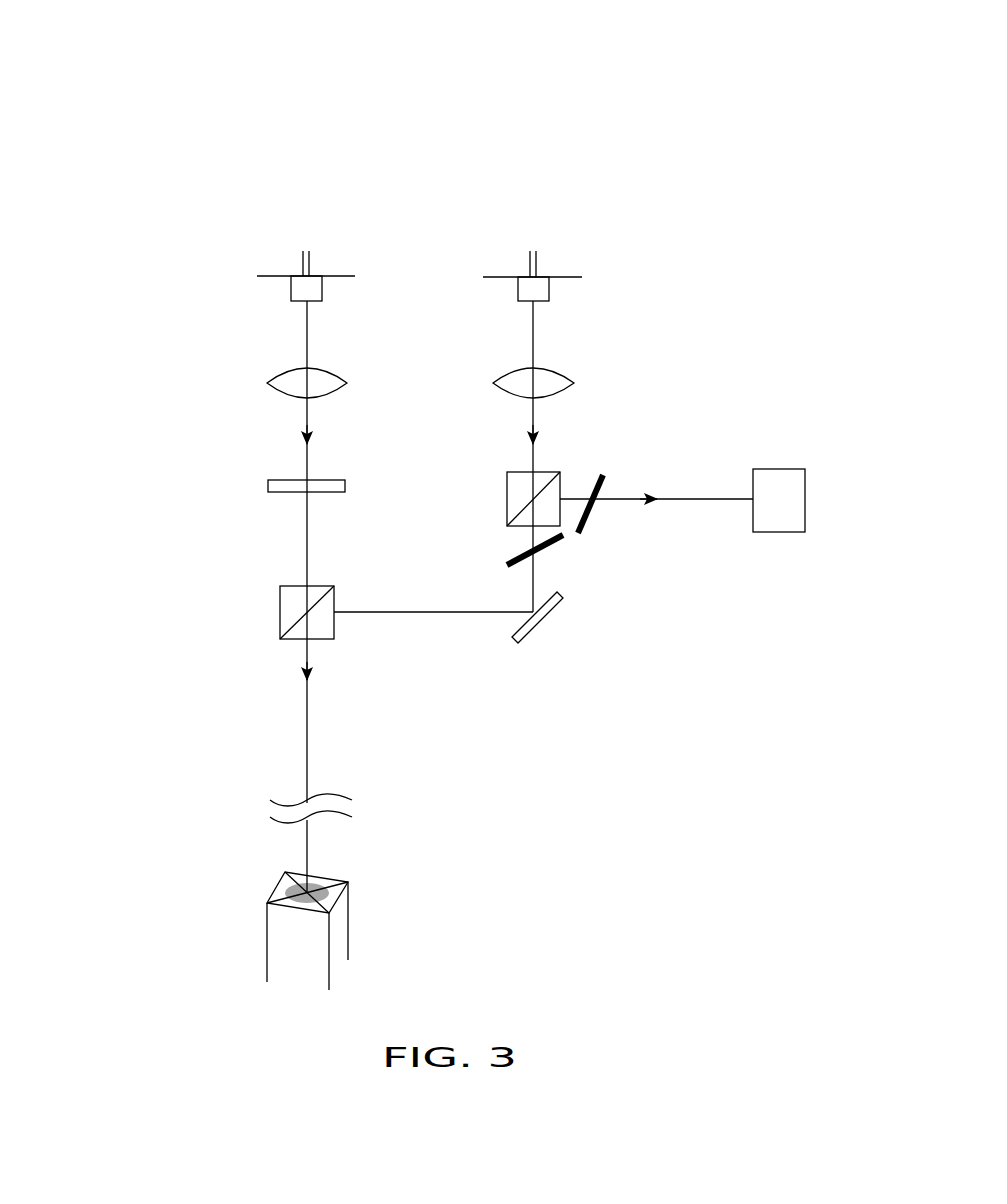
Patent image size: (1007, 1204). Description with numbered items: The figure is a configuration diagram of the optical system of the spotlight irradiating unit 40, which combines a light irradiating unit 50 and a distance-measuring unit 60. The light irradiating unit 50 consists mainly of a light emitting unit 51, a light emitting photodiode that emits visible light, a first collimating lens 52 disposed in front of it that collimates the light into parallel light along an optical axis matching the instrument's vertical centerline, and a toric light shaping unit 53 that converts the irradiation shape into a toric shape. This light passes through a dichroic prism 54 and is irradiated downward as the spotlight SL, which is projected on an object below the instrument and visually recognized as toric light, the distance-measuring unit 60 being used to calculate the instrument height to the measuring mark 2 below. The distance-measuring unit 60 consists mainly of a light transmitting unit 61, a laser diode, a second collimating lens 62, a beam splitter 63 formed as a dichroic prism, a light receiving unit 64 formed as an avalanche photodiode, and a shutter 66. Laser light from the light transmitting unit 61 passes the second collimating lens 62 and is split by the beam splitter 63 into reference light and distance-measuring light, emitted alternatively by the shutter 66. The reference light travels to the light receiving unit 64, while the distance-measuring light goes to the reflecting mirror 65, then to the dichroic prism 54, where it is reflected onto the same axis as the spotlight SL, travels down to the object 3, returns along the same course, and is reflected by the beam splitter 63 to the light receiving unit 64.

The spotlight irradiating unit 40 is at (122, 88).
The light irradiating unit 50 is at (310, 205).
The distance-measuring unit 60 is at (543, 207).
The light emitting unit 51 is at (273, 278).
The first collimating lens 52 is at (267, 383).
The toric light shaping unit 53 is at (268, 486).
The dichroic prism 54 is at (280, 614).
The light transmitting unit 61 is at (582, 290).
The second collimating lens 62 is at (574, 383).
The beam splitter 63 is at (562, 482).
The light receiving unit 64 is at (768, 532).
The reflecting mirror 65 is at (552, 605).
The shutter 66 is at (592, 510).
The spotlight SL is at (327, 888).
The measuring mark 2 is at (276, 888).
The workpiece 3 is at (283, 935).